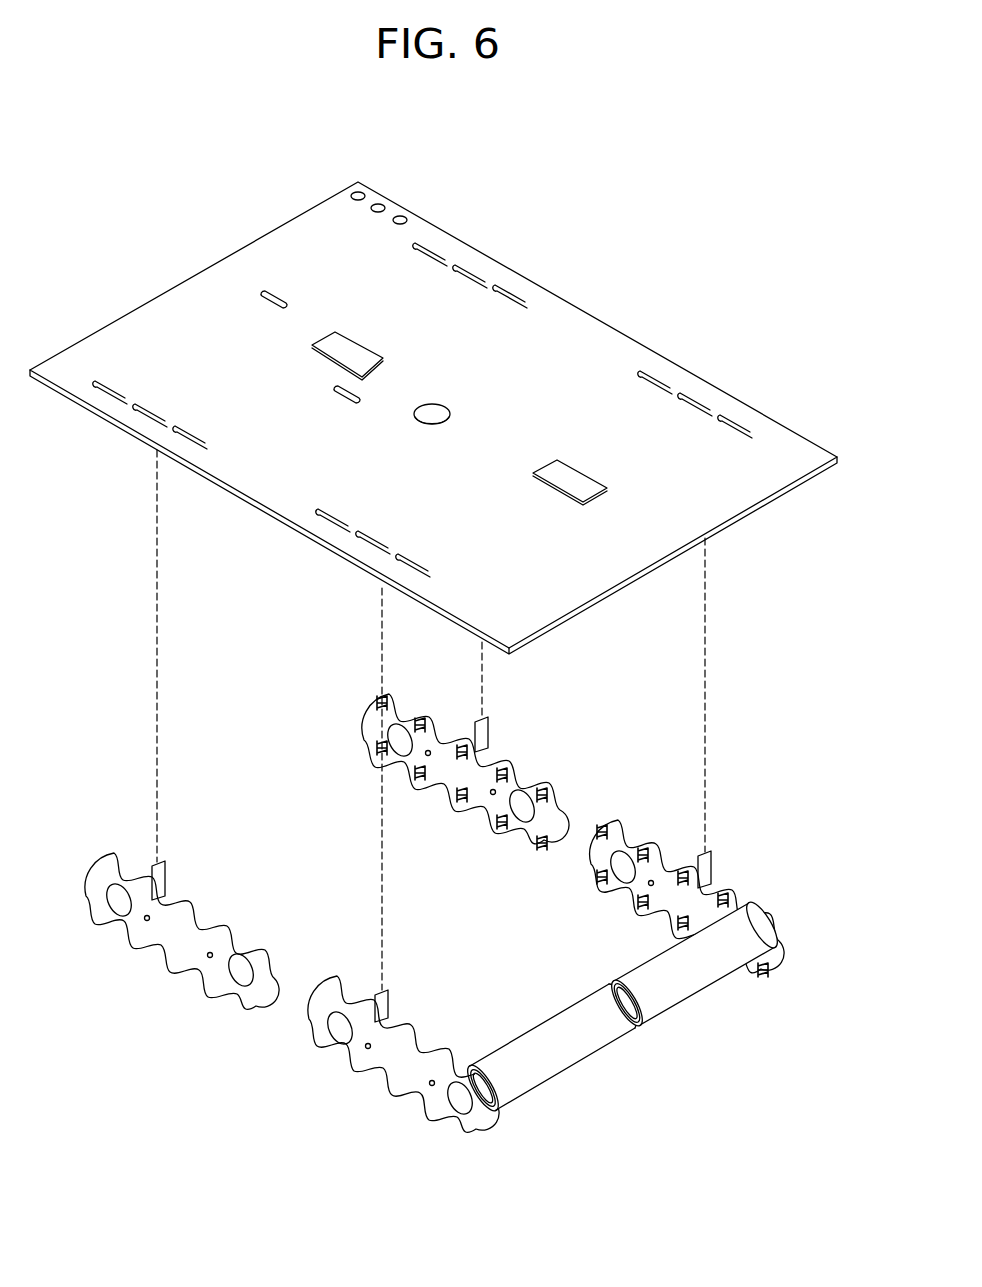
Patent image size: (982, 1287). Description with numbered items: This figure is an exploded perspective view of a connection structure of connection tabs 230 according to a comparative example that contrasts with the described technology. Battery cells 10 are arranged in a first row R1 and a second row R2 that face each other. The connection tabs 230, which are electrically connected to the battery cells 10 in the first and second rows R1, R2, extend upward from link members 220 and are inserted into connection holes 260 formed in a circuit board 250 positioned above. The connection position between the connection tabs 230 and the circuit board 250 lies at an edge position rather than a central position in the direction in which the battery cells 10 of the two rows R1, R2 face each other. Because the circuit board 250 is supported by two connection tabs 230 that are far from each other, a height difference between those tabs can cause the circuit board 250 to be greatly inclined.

The battery cell 10 is at (545, 1070).
The link member 220 is at (628, 842).
The connection tab 230 is at (704, 857).
The circuit board 250 is at (588, 330).
The connection hole 260 is at (517, 290).
The first row R1 is at (590, 1076).
The second row R2 is at (707, 1008).